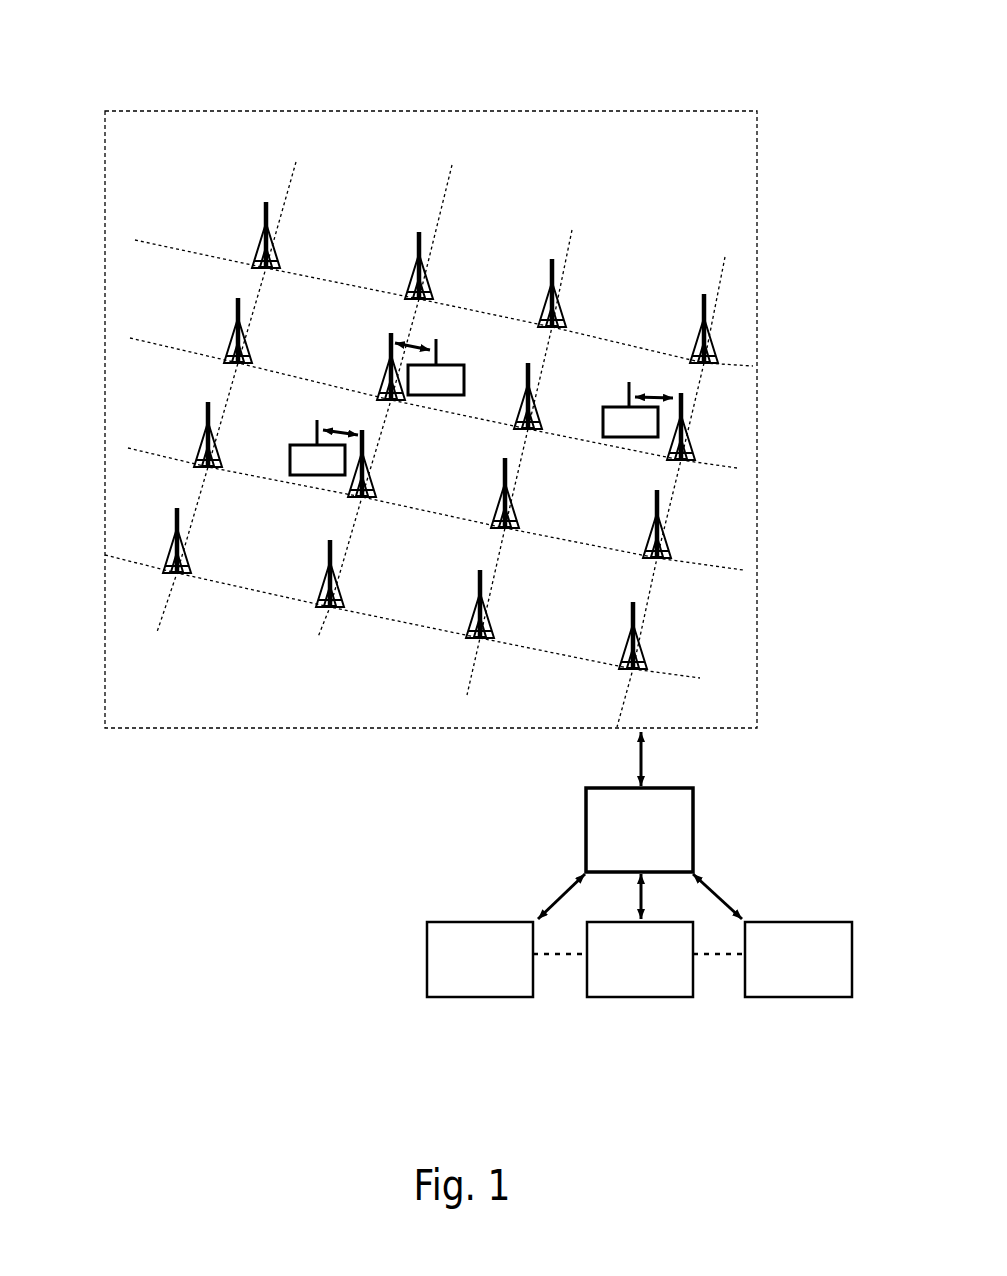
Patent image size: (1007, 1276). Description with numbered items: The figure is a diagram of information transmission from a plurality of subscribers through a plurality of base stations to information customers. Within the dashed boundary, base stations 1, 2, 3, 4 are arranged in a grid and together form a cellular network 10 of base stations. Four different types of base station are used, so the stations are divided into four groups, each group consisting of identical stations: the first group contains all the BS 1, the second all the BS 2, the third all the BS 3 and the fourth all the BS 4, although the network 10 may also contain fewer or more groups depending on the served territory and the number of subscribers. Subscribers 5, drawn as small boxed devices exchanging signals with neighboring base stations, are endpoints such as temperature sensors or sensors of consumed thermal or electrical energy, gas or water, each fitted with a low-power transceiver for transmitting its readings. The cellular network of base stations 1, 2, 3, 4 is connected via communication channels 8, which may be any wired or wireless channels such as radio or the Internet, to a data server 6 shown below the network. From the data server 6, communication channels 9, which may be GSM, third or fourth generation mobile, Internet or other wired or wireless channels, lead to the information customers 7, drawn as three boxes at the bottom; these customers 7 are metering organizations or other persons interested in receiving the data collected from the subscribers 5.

The base station 1 is at (306, 313).
The base station 2 is at (532, 288).
The base station 3 is at (545, 414).
The base station 4 is at (284, 416).
The subscriber 5 is at (400, 413).
The data server 6 is at (727, 809).
The information customer 7 is at (622, 999).
The communication channel 8 is at (754, 731).
The communication channel 9 is at (727, 903).
The cellular network 10 is at (481, 419).